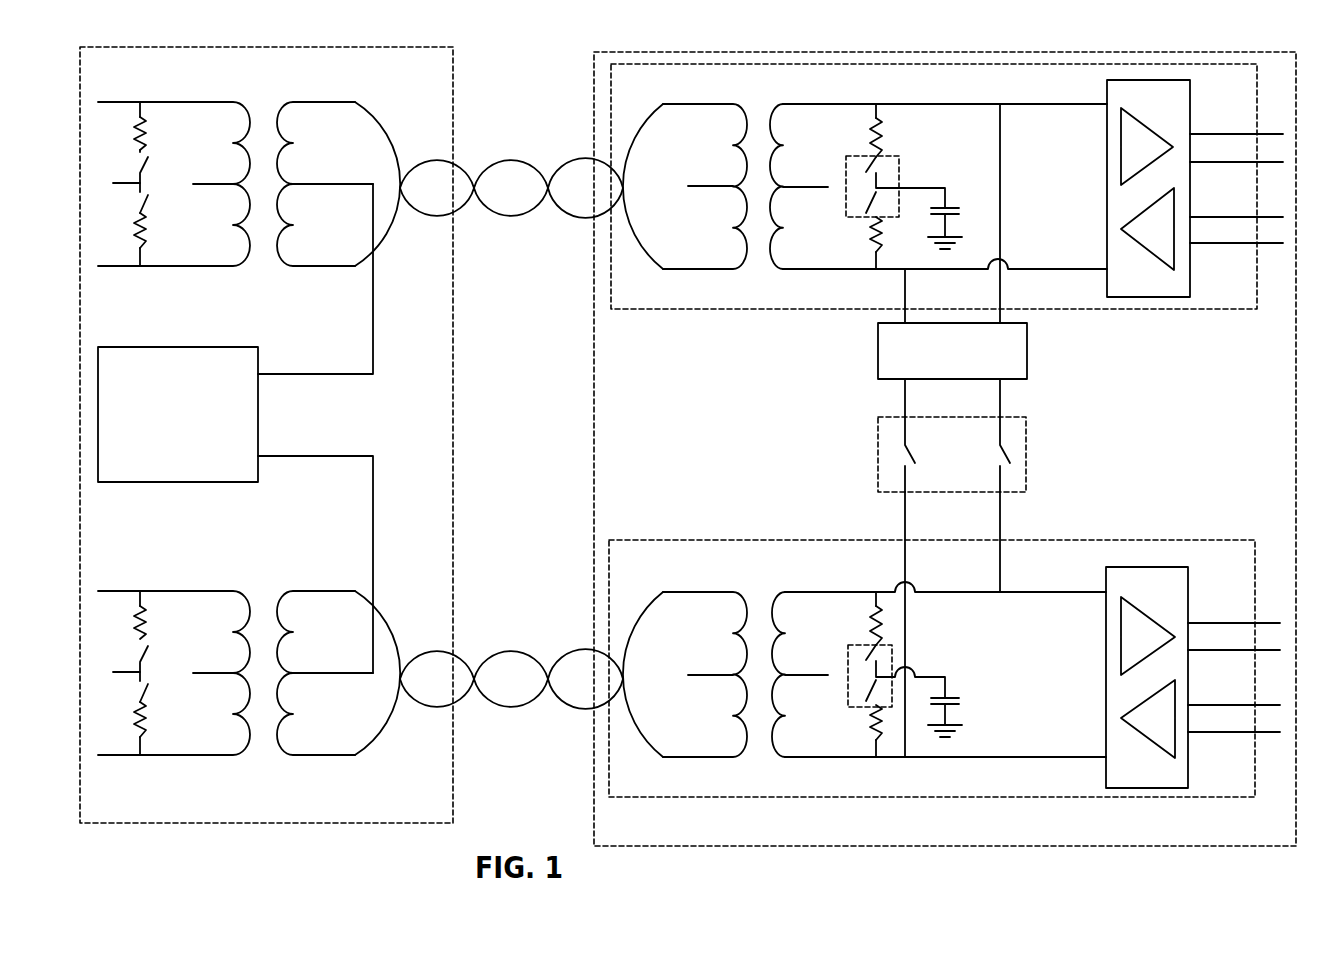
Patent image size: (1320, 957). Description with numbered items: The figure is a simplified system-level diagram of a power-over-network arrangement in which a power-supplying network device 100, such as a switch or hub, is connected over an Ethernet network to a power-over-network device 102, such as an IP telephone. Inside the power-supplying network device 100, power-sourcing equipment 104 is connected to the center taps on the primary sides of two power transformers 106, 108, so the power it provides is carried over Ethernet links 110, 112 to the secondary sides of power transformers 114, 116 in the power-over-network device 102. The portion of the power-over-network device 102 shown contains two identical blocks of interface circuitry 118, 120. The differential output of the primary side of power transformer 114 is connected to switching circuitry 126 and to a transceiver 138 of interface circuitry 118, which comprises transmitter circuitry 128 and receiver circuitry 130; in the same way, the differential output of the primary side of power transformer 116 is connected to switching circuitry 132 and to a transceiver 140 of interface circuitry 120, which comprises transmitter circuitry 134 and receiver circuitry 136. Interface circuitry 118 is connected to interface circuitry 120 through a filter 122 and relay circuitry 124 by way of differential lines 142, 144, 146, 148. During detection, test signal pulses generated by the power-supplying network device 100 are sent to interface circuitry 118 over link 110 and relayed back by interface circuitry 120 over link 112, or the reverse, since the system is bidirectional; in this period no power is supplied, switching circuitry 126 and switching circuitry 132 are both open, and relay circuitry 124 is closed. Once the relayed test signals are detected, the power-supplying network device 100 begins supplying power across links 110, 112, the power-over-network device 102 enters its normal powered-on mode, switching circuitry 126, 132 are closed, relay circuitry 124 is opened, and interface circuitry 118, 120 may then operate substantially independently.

The power-supplying network device 100 is at (143, 823).
The power-over-network device 102 is at (732, 846).
The power-sourcing equipment 104 is at (160, 347).
The power transformer 106 is at (322, 102).
The power transformer 108 is at (377, 729).
The Ethernet link 110 is at (505, 160).
The Ethernet link 112 is at (502, 643).
The power transformer 114 is at (705, 270).
The power transformer 116 is at (700, 760).
The interface circuitry 118 is at (750, 309).
The interface circuitry 120 is at (690, 539).
The filter 122 is at (878, 357).
The relay circuitry 124 is at (878, 462).
The switching circuitry 126 is at (900, 168).
The transmitter circuitry 128 is at (1152, 130).
The receiver circuitry 130 is at (1163, 266).
The switching circuitry 132 is at (848, 658).
The transmitter circuitry 134 is at (1153, 621).
The receiver circuitry 136 is at (1162, 755).
The transceiver 138 is at (1191, 117).
The transceiver 140 is at (1189, 597).
The differential line 142 is at (900, 410).
The differential line 144 is at (1003, 410).
The differential line 146 is at (903, 527).
The differential line 148 is at (1003, 527).